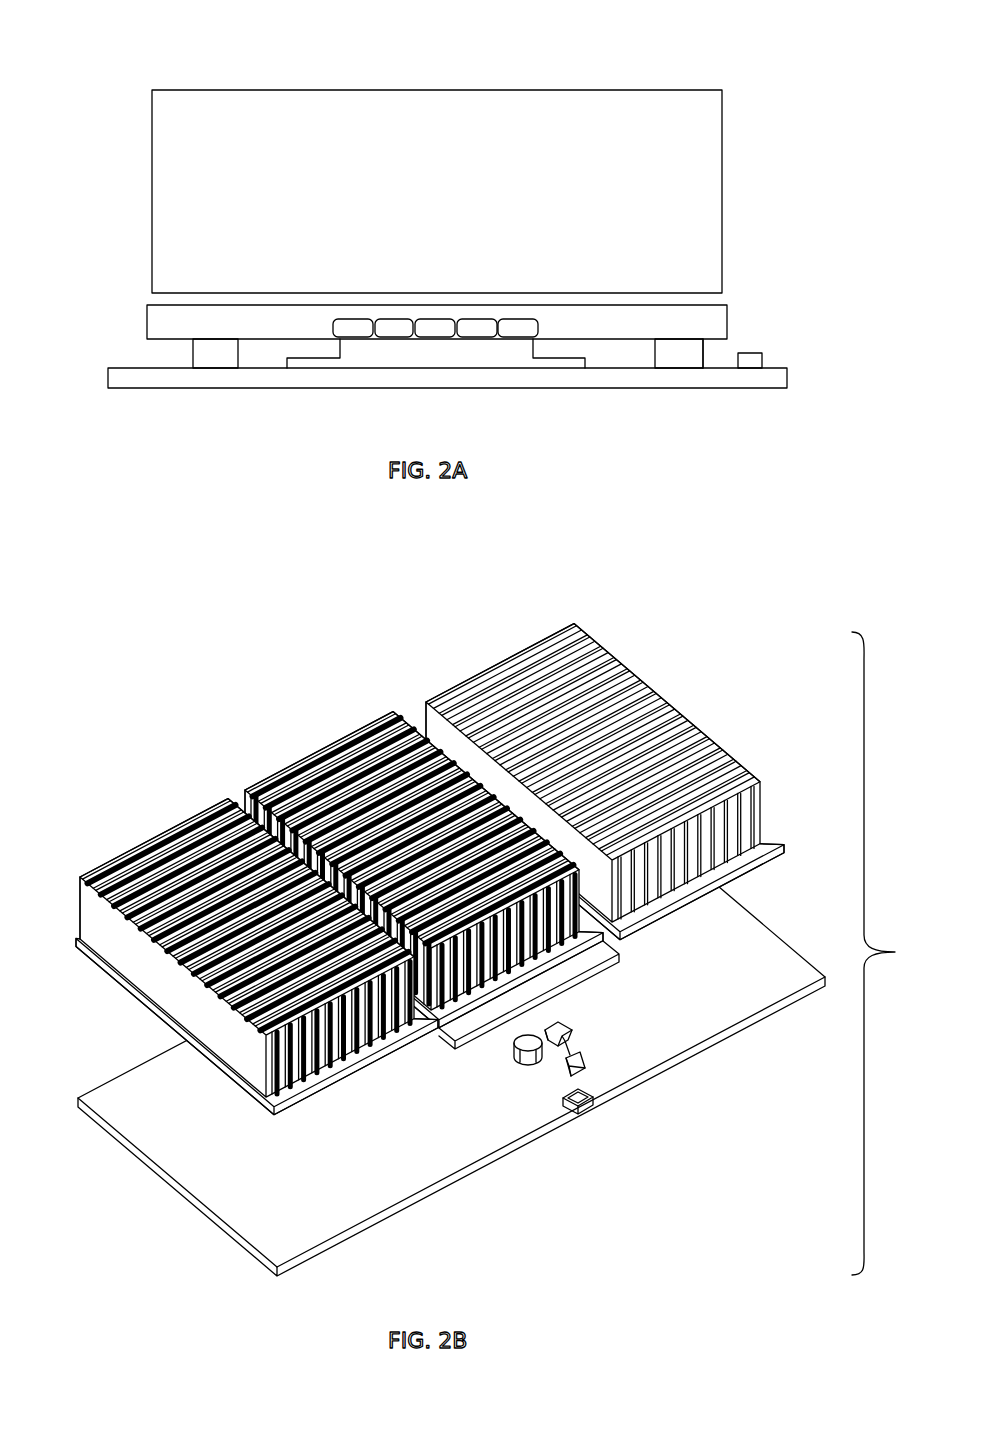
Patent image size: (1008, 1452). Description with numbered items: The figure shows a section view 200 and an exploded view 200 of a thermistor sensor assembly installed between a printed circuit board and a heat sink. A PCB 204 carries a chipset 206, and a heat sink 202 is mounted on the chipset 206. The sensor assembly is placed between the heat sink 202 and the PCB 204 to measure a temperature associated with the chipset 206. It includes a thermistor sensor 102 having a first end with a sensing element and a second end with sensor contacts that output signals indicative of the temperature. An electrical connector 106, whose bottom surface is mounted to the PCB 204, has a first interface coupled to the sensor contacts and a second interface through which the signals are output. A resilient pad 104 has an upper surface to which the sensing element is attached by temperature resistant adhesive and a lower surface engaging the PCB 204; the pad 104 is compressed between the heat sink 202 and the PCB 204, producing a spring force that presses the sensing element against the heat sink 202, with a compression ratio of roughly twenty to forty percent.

In FIG. 2A, the section view 200 is at (186, 50).
In FIG. 2B, the section view 200 is at (337, 622).
In FIG. 2A, the heat sink 202 is at (347, 328).
In FIG. 2A, the PCB 204 is at (122, 381).
In FIG. 2B, the PCB 204 is at (142, 1122).
In FIG. 2A, the chipset 206 is at (381, 358).
In FIG. 2B, the chipset 206 is at (455, 1038).
In FIG. 2A, the thermistor sensor 102 is at (720, 356).
In FIG. 2B, the thermistor sensor 102 is at (570, 1042).
In FIG. 2A, the resilient pad 104 is at (683, 358).
In FIG. 2B, the resilient pad 104 is at (527, 1060).
In FIG. 2A, the electrical connector 106 is at (750, 358).
In FIG. 2B, the electrical connector 106 is at (597, 1110).